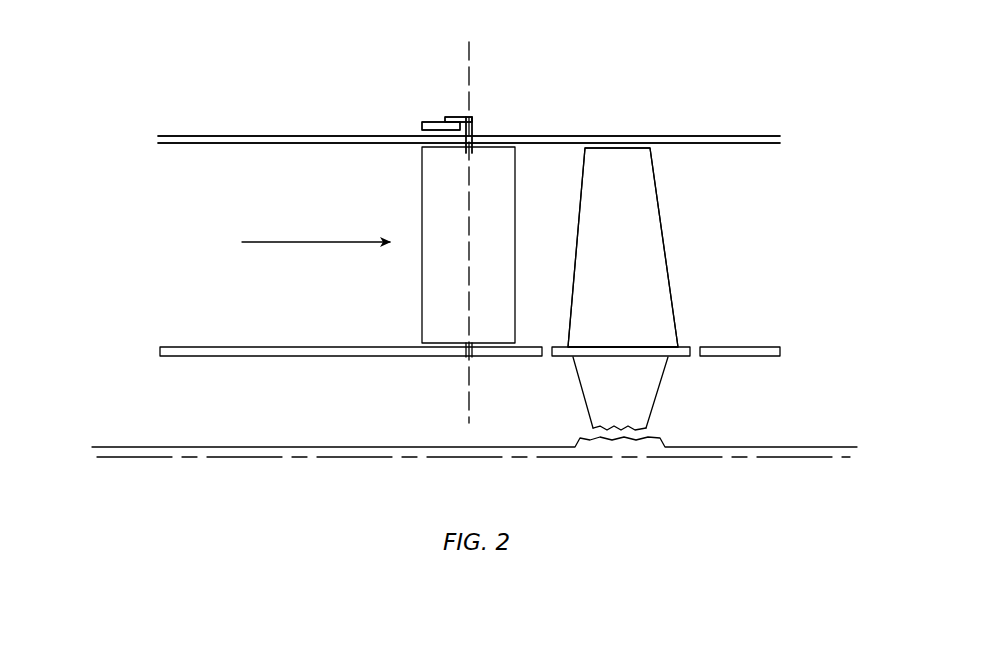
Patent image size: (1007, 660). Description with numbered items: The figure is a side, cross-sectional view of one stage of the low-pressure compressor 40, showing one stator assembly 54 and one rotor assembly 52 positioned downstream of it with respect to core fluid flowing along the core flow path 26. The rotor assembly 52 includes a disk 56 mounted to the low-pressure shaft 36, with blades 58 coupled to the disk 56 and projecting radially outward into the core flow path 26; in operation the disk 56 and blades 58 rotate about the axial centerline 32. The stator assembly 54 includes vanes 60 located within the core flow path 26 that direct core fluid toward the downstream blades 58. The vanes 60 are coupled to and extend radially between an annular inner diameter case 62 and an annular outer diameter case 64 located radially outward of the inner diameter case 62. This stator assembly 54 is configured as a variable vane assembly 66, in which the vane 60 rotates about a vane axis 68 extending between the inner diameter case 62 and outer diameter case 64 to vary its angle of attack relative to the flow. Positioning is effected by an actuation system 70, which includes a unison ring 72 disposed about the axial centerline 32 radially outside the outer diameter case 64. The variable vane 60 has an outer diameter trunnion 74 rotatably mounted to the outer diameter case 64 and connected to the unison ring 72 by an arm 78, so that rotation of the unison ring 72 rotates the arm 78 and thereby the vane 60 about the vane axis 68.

The low-pressure compressor 40 is at (792, 100).
The annular outer diameter (OD) case 64 is at (275, 140).
The annular inner diameter (ID) case 62 is at (388, 352).
The vanes 60 is at (444, 298).
The core flow path 26 is at (307, 240).
The vane axis 68 is at (470, 50).
The outer diameter trunnion 74 is at (478, 126).
The unison ring 72 is at (422, 124).
The arm 78 is at (450, 116).
The stator assembly 54 is at (426, 104).
The actuation system 70 is at (457, 80).
The variable vane assembly 66 is at (497, 108).
The rotor assembly 52 is at (667, 170).
The blades 58 is at (650, 273).
The disk 56 is at (643, 440).
The low-pressure shaft 36 is at (812, 446).
The axial centerline 32 is at (832, 463).